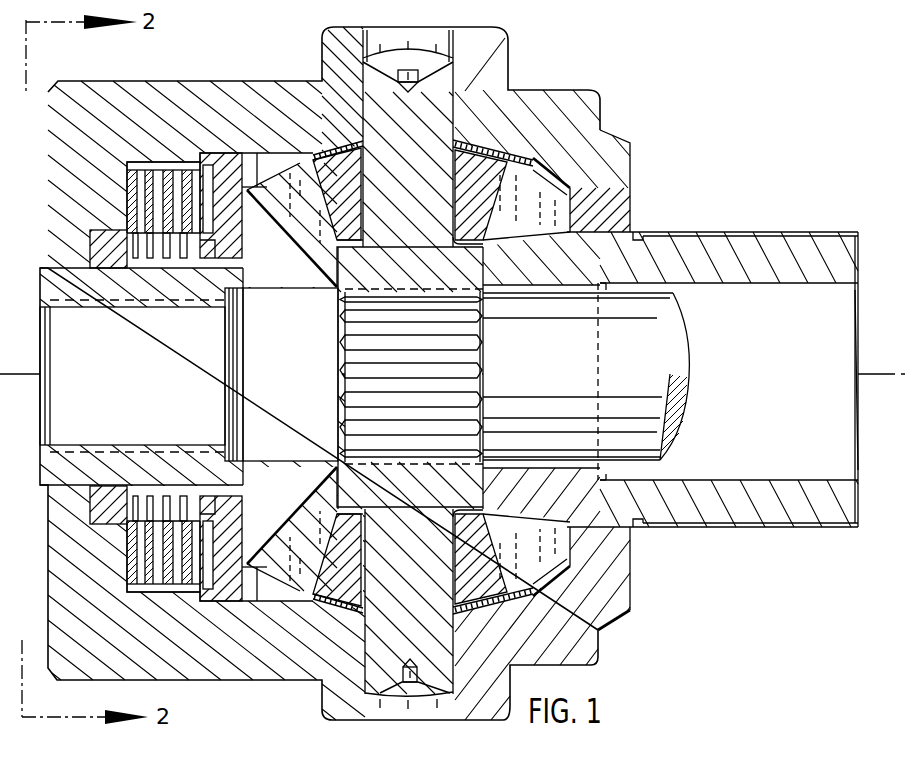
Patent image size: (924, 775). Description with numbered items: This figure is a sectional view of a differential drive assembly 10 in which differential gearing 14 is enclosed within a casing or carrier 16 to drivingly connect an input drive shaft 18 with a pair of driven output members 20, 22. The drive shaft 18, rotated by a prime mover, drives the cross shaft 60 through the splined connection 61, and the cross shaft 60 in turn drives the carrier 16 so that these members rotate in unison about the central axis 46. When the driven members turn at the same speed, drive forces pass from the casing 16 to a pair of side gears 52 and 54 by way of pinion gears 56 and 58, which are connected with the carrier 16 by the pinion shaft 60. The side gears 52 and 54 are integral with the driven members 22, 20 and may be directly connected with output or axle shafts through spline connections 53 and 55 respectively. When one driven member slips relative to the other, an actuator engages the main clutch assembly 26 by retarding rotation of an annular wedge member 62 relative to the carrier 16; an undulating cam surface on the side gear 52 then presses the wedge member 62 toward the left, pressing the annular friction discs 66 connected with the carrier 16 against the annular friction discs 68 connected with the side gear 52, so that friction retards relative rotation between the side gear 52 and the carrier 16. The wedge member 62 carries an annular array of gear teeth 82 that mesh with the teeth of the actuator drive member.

The differential drive assembly 10 is at (600, 62).
The differential gearing 14 is at (539, 156).
The casing or carrier 16 is at (620, 190).
The input drive shaft 18 is at (680, 327).
The driven output member 20 is at (820, 503).
The driven output member 22 is at (64, 442).
The main clutch assembly 26 is at (180, 122).
The central axis 46 is at (876, 374).
The side gear 52 is at (286, 520).
The spline connection 53 is at (118, 446).
The side gear 54 is at (572, 545).
The spline connection 55 is at (750, 528).
The pinion gear 56 is at (482, 164).
The pinion gear 58 is at (472, 575).
The cross shaft 60 is at (446, 60).
The splined connection 61 is at (343, 340).
The annular wedge member 62 is at (238, 182).
The annular friction discs 66 is at (152, 208).
The annular friction discs 68 is at (152, 546).
The gear teeth 82 is at (227, 600).